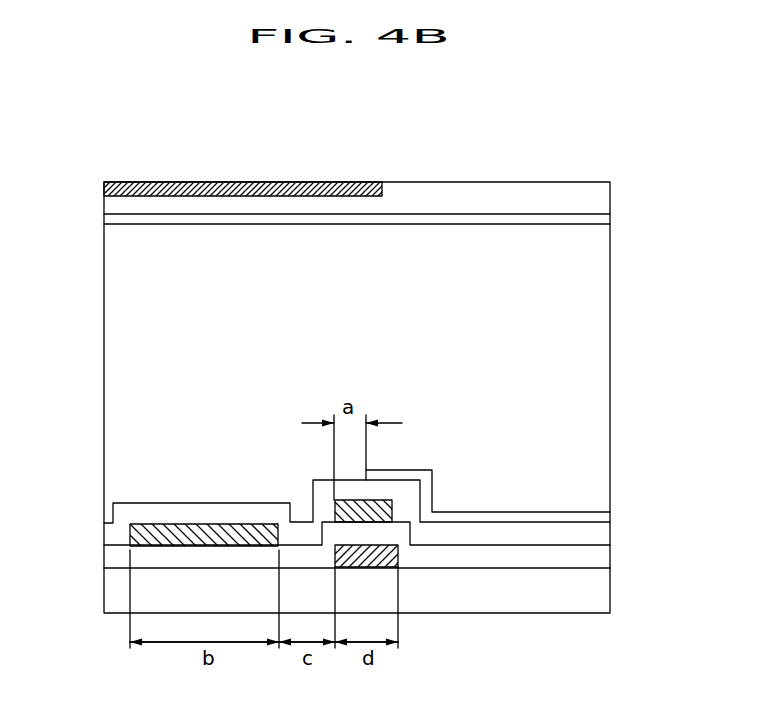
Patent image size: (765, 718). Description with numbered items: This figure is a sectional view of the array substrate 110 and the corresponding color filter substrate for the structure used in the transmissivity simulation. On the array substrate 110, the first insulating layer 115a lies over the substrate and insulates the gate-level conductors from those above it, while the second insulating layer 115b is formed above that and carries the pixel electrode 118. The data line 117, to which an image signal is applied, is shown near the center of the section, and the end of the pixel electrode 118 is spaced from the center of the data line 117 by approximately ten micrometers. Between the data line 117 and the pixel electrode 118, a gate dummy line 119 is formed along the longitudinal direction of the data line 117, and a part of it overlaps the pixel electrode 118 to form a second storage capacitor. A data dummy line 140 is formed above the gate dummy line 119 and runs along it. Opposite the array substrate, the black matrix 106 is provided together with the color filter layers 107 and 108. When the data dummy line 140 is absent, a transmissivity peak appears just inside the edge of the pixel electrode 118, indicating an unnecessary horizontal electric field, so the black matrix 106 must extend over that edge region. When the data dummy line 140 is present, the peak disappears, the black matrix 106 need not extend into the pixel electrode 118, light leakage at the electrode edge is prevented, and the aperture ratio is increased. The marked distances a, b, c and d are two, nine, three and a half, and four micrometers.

The black matrix 106 is at (104, 186).
The color filter layer 107 is at (600, 198).
The common electrode 108 is at (600, 222).
The array substrate 110 is at (600, 594).
The first insulating layer 115a is at (600, 556).
The second insulating layer 115b is at (600, 527).
The data line 117 is at (133, 530).
The pixel electrode 118 is at (592, 513).
The gate dummy line 119 is at (398, 562).
The data dummy line 140 is at (390, 506).